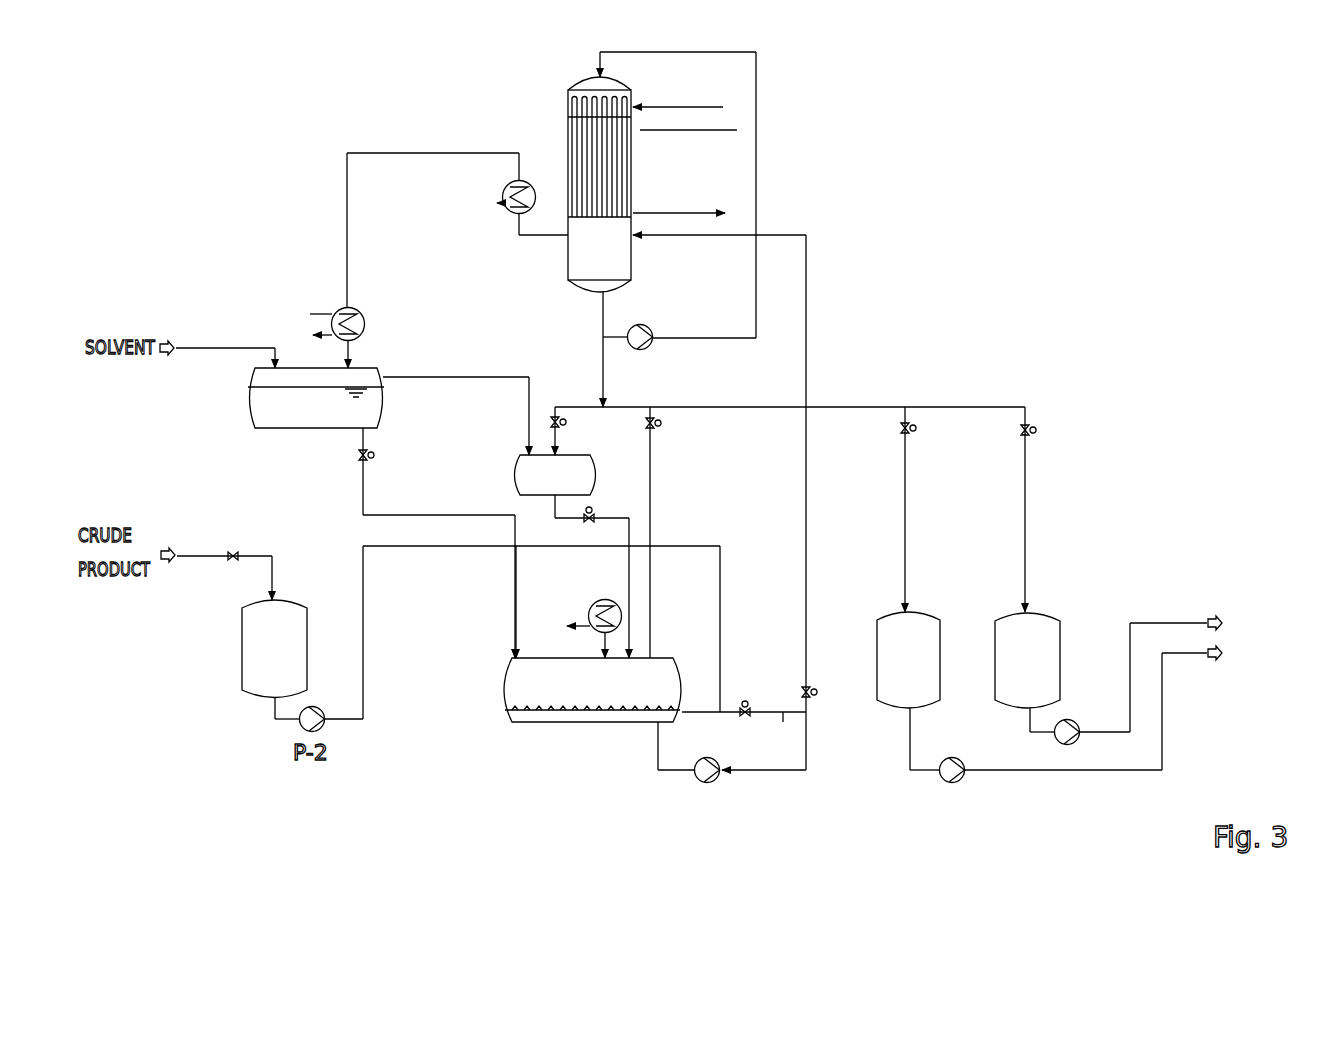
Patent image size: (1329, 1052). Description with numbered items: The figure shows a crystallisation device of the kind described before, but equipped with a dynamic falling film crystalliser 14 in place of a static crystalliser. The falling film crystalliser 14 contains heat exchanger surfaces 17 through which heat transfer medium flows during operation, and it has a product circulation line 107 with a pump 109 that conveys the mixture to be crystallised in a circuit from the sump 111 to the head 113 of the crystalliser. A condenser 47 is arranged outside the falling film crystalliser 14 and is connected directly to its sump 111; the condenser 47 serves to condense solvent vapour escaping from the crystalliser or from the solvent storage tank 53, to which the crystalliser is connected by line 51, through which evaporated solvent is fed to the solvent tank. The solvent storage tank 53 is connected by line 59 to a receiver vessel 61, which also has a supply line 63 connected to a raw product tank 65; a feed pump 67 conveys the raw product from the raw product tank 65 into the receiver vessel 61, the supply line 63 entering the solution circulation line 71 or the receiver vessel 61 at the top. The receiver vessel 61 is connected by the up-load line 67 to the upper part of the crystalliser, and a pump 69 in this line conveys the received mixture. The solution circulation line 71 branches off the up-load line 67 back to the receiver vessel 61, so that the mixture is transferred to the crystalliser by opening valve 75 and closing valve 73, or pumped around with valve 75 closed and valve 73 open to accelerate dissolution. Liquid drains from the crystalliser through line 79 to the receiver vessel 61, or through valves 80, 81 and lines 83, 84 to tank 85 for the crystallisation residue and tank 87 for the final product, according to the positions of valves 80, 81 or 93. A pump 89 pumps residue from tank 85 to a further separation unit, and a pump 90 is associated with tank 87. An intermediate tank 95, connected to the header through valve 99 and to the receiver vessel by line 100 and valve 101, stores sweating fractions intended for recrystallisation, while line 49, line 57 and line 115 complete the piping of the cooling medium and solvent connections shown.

The falling film crystalliser 14 is at (548, 95).
The heat exchanger surfaces 17 is at (578, 148).
The condenser 47 is at (444, 194).
The cooling medium line 49 is at (497, 183).
The line 51 is at (518, 235).
The solvent storage tank 53 is at (387, 408).
The heat exchanger 57 is at (368, 320).
The line 59 is at (362, 493).
The receiver vessel 61 is at (505, 672).
The supply line 63 is at (678, 547).
The raw product tank 65 is at (243, 646).
The up-load line 67 is at (807, 461).
The pump 69 is at (725, 778).
The solution circulation line 71 is at (744, 734).
The valve 73 is at (750, 707).
The valve 75 is at (813, 685).
The line 79 is at (651, 505).
The valve 80 is at (917, 428).
The valve 81 is at (1027, 433).
The line 83 is at (907, 543).
The line 84 is at (1027, 518).
The tank 85 is at (938, 615).
The tank 87 is at (1060, 635).
The pump 89 is at (963, 775).
The pump P-6 90 is at (1078, 735).
The valve 93 is at (660, 422).
The intermediate tank 95 is at (597, 463).
The valve 99 is at (553, 418).
The line 100 is at (628, 597).
The valve 101 is at (587, 576).
The product circulation line 107 is at (756, 168).
The pump 109 is at (653, 340).
The sump 111 is at (631, 265).
The head 113 is at (635, 87).
The line 115 is at (566, 238).